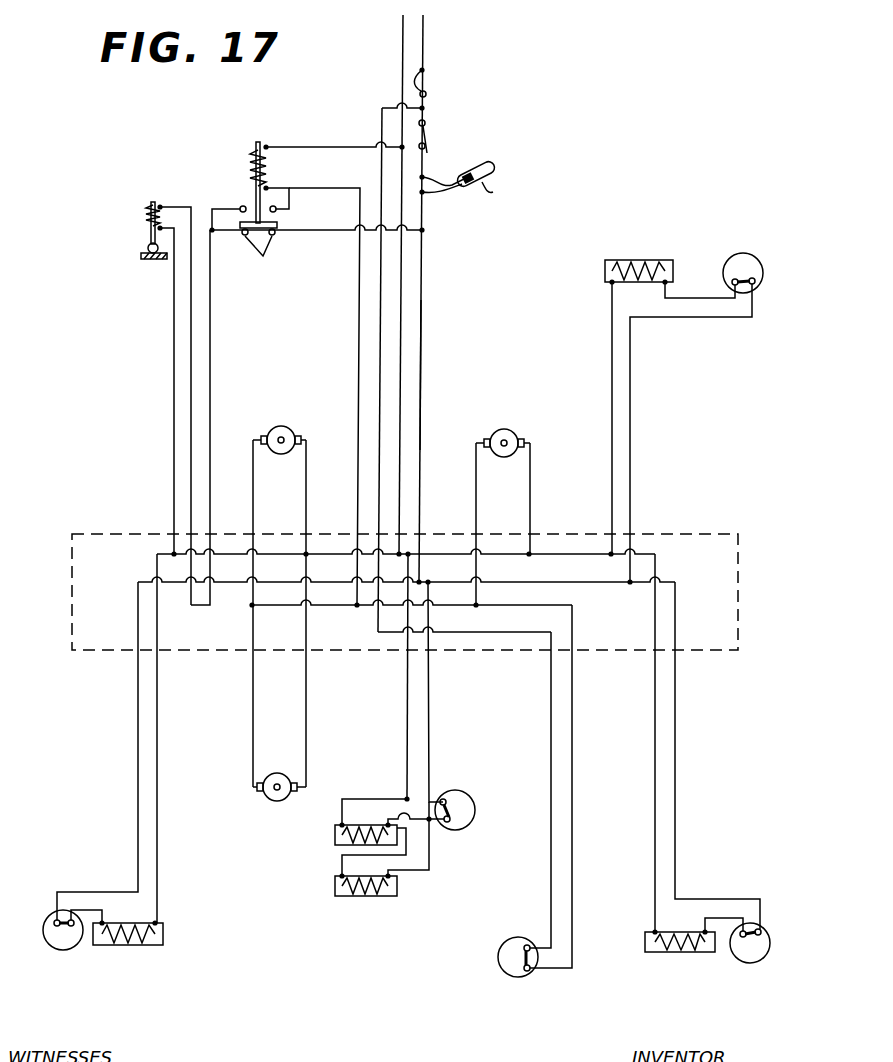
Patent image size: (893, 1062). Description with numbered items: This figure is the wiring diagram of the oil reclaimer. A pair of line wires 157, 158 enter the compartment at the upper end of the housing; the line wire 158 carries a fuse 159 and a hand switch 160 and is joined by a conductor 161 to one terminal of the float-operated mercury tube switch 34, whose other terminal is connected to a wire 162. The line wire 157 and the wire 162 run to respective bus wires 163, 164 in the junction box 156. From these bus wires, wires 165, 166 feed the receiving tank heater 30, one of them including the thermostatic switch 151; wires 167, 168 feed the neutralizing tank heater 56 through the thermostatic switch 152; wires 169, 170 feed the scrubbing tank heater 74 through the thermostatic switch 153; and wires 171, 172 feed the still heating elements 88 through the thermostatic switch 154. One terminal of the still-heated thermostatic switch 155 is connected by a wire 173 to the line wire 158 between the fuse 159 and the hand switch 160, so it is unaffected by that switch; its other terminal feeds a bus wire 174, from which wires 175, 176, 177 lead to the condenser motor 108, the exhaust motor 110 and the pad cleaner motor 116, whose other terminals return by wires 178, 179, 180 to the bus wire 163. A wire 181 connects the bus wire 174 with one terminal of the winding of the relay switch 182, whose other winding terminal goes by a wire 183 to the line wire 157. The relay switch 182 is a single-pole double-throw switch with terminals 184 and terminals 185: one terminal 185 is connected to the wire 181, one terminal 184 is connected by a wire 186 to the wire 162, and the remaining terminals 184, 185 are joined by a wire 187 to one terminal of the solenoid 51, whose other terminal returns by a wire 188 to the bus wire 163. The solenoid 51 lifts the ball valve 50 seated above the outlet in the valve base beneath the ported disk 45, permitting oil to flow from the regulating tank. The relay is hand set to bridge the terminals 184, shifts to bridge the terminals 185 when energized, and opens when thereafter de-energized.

The electric heater 30 is at (633, 262).
The mercury tube switch 34 is at (487, 181).
The disk 45 is at (140, 257).
The ball valve 50 is at (148, 247).
The solenoid 51 is at (150, 213).
The electric heater 56 is at (128, 946).
The electric heater 74 is at (670, 952).
The electric heating elements 88 is at (342, 836).
The electric motor 108 is at (510, 423).
The electric motor 110 is at (293, 421).
The electric motor 116 is at (272, 800).
The thermostatic switch 151 is at (743, 260).
The thermostatic switch 152 is at (62, 950).
The thermostatic switch 153 is at (750, 963).
The thermostatic switch 154 is at (468, 801).
The thermostatic switch 155 is at (501, 944).
The junction box 156 is at (730, 534).
The line wire 157 is at (403, 46).
The line wire 158 is at (423, 45).
The fuse 159 is at (428, 90).
The hand switch 160 is at (426, 136).
The conductor 161 is at (440, 182).
The wire 162 is at (423, 322).
The bus wire 163 is at (561, 554).
The bus wire 164 is at (613, 583).
The wire 165 is at (611, 392).
The wire 166 is at (630, 408).
The wire 167 is at (157, 706).
The wire 168 is at (138, 710).
The wire 169 is at (655, 765).
The wire 170 is at (675, 765).
The wire 171 is at (407, 718).
The wire 172 is at (429, 715).
The wire 173 is at (551, 740).
The bus wire 174 is at (572, 720).
The wire 175 is at (476, 480).
The wire 176 is at (253, 498).
The wire 177 is at (253, 690).
The wire 178 is at (530, 480).
The wire 179 is at (306, 480).
The wire 180 is at (306, 686).
The wire 181 is at (357, 310).
The relay switch 182 is at (256, 156).
The wire 183 is at (318, 141).
The terminals 184 is at (263, 256).
The terminals 185 is at (243, 207).
The wire 186 is at (330, 232).
The wire 187 is at (192, 328).
The wire 188 is at (173, 360).